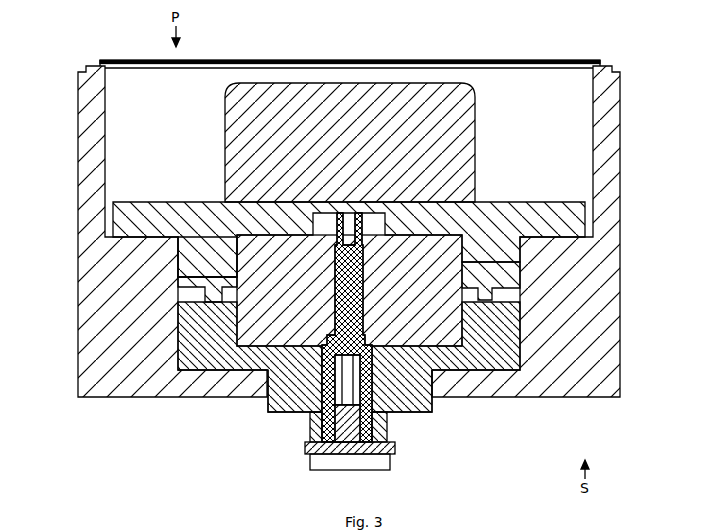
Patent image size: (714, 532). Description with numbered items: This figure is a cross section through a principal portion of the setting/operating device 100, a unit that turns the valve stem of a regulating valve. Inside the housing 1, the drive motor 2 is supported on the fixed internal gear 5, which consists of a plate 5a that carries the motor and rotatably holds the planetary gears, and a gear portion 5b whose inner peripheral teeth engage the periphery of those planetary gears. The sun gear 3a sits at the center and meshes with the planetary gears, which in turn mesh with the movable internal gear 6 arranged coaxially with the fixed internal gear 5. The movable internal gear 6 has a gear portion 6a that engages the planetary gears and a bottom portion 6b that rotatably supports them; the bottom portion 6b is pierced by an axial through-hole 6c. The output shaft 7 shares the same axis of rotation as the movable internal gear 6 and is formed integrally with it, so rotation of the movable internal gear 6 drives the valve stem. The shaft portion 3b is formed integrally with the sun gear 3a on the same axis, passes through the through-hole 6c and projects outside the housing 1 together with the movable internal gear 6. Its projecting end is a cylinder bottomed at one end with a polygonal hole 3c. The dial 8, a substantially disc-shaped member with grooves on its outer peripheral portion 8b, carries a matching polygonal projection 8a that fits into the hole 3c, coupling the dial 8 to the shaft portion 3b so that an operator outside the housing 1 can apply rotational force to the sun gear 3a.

The housing 1 is at (622, 140).
The setting/operating device 100 is at (632, 53).
The drive motor 2 is at (352, 83).
The sun gear 3a is at (365, 326).
The shaft portion 3b is at (432, 378).
The hole 3c is at (388, 428).
The fixed internal gear 5 is at (299, 239).
The plate 5a is at (122, 220).
The gear portion 5b is at (178, 252).
The movable internal gear 6 is at (267, 359).
The gear portion 6a is at (233, 320).
The bottom portion 6b is at (178, 372).
The through-hole 6c is at (268, 404).
The output shaft 7 is at (377, 462).
The dial 8 is at (288, 439).
The projection 8a is at (310, 425).
The outer peripheral portion 8b is at (305, 447).